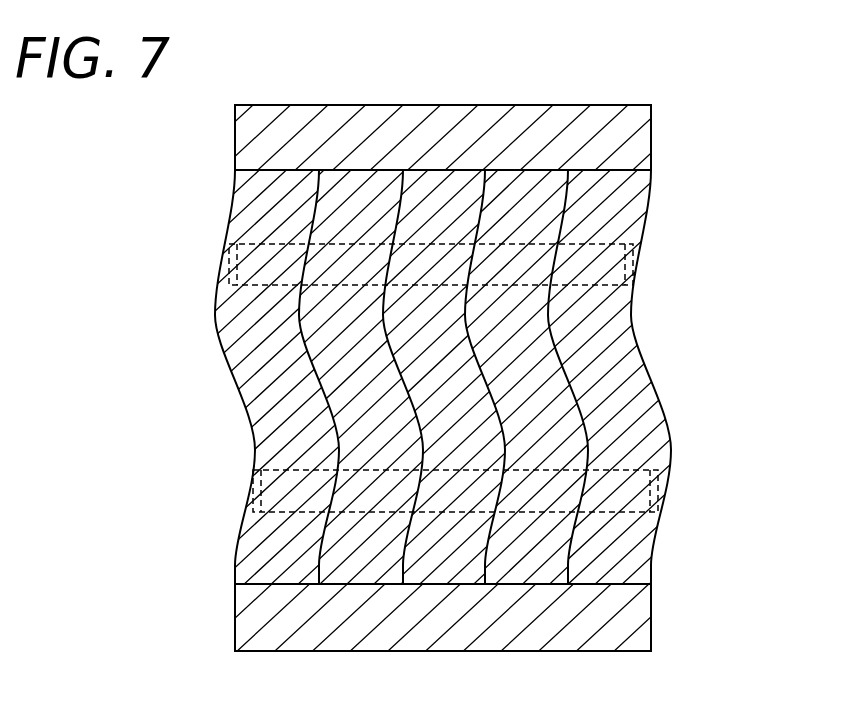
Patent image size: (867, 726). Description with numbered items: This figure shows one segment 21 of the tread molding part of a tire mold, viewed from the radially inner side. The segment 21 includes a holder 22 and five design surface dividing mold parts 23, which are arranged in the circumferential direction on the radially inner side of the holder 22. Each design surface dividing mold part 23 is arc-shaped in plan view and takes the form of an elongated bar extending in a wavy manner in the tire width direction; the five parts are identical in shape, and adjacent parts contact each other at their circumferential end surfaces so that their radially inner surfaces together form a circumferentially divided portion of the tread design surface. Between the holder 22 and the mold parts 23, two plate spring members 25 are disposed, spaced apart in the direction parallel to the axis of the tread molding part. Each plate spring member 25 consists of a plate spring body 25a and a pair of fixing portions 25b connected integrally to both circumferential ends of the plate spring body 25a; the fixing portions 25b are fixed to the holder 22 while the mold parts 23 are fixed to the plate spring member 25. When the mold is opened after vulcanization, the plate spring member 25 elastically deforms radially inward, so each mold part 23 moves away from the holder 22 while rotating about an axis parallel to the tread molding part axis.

The segment 21 is at (689, 74).
The holder 22 is at (654, 135).
The design surface dividing mold part 23 is at (284, 164).
The plate spring member 25 is at (268, 237).
The plate spring body 25a is at (342, 266).
The fixing portion 25b is at (231, 262).